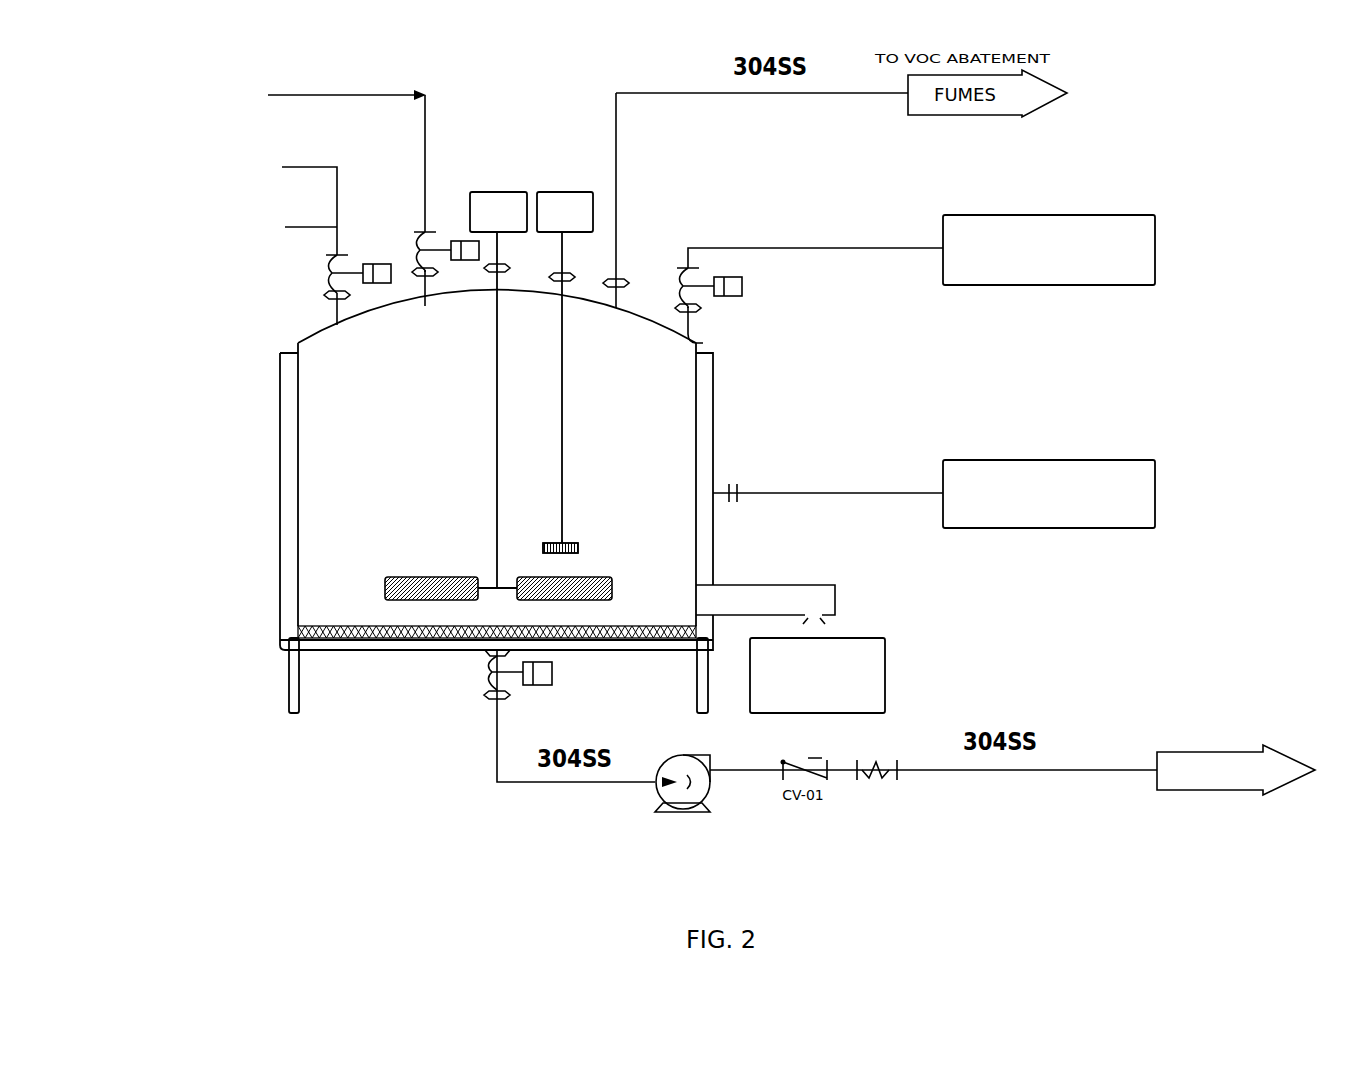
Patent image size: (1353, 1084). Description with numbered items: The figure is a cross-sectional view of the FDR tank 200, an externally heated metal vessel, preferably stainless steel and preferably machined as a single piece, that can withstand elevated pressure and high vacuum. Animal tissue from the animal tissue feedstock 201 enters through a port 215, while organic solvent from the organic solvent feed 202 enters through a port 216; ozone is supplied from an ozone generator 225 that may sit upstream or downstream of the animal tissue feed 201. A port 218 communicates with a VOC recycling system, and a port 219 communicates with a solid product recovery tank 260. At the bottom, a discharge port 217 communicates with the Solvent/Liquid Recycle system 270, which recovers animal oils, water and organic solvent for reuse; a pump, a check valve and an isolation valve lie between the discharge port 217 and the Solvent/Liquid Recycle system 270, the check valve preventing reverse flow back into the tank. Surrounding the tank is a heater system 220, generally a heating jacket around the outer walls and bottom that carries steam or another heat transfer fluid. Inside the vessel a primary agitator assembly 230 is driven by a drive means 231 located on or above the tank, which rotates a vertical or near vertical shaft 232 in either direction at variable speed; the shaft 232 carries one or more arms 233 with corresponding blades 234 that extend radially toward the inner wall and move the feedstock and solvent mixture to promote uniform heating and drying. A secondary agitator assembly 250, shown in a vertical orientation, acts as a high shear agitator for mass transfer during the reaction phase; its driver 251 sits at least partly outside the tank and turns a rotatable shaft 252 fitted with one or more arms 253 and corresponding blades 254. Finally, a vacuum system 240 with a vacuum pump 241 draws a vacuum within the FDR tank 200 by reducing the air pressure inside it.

The FDR tank 200 is at (152, 778).
The animal tissue feedstock 201 is at (209, 240).
The organic solvent feed 202 is at (246, 147).
The port 215 is at (330, 291).
The port 216 is at (429, 269).
The discharge port 217 is at (543, 716).
The port 218 is at (628, 201).
The port 219 is at (765, 593).
The heater system 220 is at (934, 494).
The ozone generator 225 is at (242, 198).
The primary agitator assembly 230 is at (496, 501).
The drive means 231 is at (498, 212).
The shaft 232 is at (483, 410).
The arms 233 is at (404, 578).
The blades 234 is at (471, 589).
The vacuum system 240 is at (1049, 250).
The vacuum pump 241 is at (809, 295).
The secondary agitator assembly 250 is at (596, 512).
The driver 251 is at (565, 212).
The rotatable shaft 252 is at (578, 387).
The arms 253 is at (588, 549).
The blades 254 is at (605, 549).
The solid product recovery tank 260 is at (817, 675).
The Solvent/Liquid Recycle system 270 is at (1228, 760).